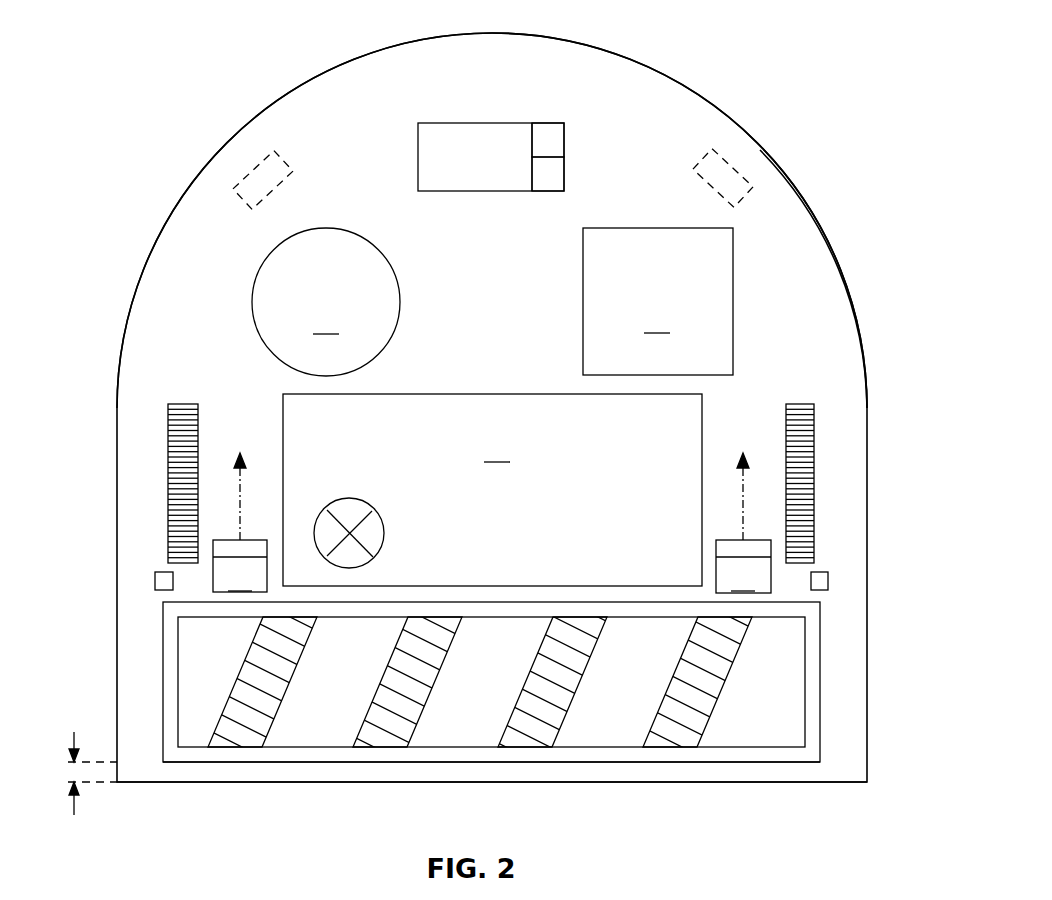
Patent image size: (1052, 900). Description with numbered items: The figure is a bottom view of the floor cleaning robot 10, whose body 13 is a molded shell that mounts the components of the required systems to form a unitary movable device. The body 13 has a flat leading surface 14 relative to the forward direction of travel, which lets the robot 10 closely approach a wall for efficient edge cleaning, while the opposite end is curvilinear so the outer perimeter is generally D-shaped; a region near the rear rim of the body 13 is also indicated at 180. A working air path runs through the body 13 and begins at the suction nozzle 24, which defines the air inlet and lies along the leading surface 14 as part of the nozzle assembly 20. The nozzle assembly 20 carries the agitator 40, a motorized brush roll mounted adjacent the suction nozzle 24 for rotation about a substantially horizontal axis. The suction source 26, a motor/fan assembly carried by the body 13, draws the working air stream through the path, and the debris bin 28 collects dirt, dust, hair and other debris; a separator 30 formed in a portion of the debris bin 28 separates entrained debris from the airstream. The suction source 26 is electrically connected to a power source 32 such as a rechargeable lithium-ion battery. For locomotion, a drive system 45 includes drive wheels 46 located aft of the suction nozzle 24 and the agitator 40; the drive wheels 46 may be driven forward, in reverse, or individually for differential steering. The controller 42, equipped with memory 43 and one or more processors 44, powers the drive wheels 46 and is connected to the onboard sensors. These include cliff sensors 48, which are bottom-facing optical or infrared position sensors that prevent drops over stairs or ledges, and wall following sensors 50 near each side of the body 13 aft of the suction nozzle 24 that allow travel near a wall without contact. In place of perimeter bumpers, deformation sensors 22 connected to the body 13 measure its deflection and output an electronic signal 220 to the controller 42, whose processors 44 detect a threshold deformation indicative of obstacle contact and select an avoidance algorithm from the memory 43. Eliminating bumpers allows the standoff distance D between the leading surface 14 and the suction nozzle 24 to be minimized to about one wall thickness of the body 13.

The floor cleaning robot 10 is at (252, 40).
The body 13 is at (781, 100).
The leading surface 14 is at (200, 783).
The nozzle assembly 20 is at (884, 610).
The deformation sensor 22 is at (492, 523).
The suction nozzle 24 is at (322, 763).
The suction source 26 is at (326, 302).
The debris bin 28 is at (492, 490).
The separator 30 is at (385, 535).
The power source 32 is at (658, 301).
The agitator 40 is at (806, 693).
The controller 42 is at (480, 123).
The memory 43 is at (565, 140).
The processor 44 is at (565, 175).
The drive system 45 is at (115, 262).
The drive wheels 46 is at (168, 432).
The cliff sensors 48 is at (247, 167).
The wall following sensor 50 is at (155, 579).
The bumper 180 is at (793, 258).
The electronic signal 220 is at (233, 532).
The standoff distance D is at (68, 752).